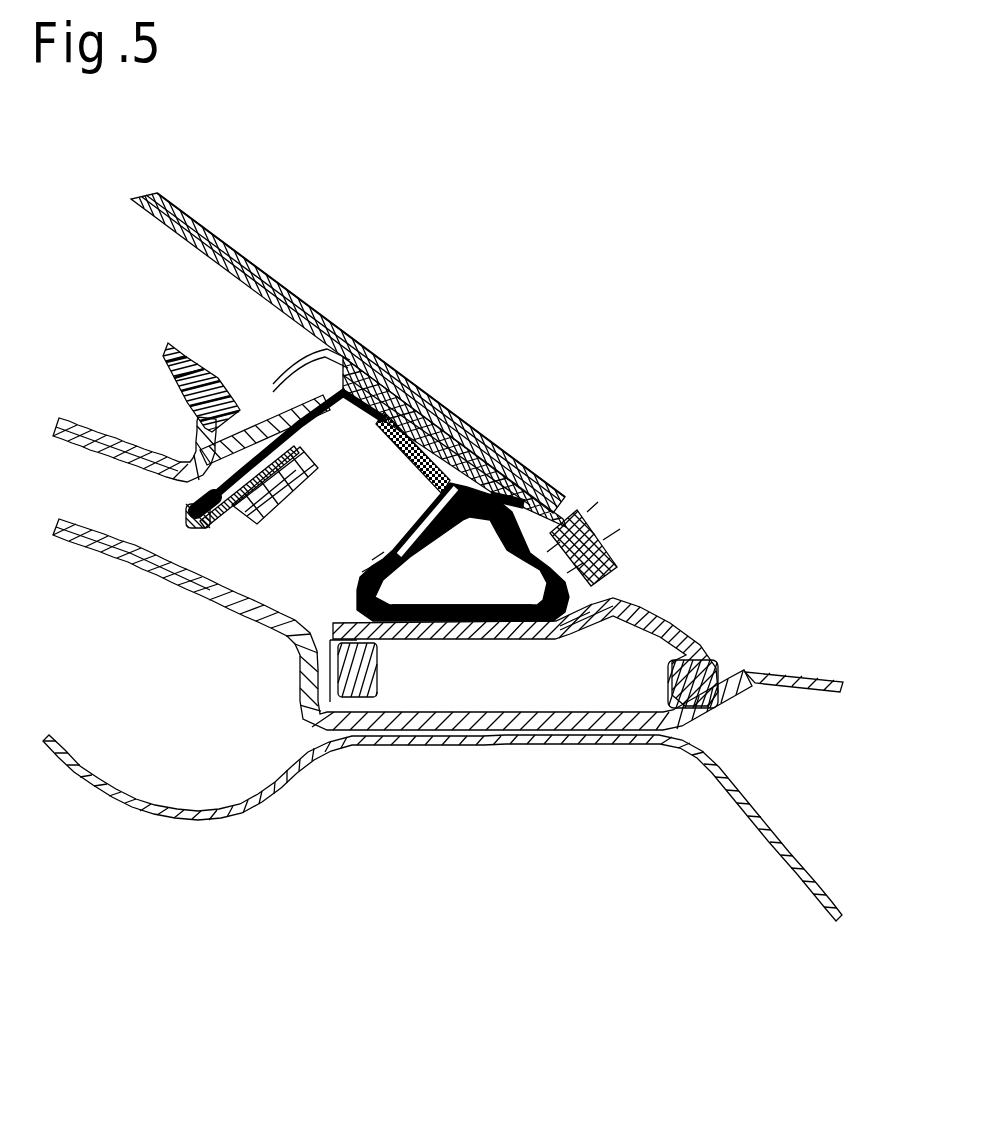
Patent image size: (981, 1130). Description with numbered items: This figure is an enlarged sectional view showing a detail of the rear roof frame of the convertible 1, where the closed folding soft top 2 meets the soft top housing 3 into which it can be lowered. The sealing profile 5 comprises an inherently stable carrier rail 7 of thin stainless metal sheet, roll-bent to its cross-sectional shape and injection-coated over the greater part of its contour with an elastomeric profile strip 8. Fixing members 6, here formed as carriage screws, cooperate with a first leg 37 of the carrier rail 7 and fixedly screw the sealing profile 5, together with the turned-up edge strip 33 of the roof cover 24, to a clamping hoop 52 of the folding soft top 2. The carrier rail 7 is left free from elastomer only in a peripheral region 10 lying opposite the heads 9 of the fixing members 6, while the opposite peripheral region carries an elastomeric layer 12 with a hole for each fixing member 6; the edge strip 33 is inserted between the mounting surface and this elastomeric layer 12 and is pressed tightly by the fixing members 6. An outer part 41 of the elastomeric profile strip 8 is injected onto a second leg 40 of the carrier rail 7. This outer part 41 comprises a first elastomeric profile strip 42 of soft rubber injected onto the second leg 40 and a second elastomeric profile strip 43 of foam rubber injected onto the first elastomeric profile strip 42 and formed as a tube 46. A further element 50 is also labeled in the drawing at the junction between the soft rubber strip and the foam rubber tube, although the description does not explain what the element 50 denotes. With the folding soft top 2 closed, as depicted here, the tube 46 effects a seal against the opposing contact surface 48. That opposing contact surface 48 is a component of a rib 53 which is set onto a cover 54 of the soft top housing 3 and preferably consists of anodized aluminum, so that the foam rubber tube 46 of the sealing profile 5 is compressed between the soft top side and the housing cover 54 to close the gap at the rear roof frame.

The convertible 1 is at (294, 847).
The folding soft top 2 is at (210, 229).
The soft top housing 3 is at (791, 671).
The sealing profile 5 is at (351, 590).
The fixing members 6 is at (165, 352).
The carrier rail 7 is at (233, 507).
The elastomeric profile strip 8 is at (356, 577).
The heads 9 is at (262, 527).
The peripheral region 10 is at (333, 424).
The elastomeric layer 12 is at (190, 502).
The roof cover 24 is at (251, 263).
The turned-up edge strip 33 is at (198, 484).
The first leg 37 is at (298, 500).
The second leg 40 is at (425, 511).
The outer part 41 is at (570, 597).
The first elastomeric profile strip 42 is at (421, 487).
The second elastomeric profile strip 43 is at (478, 605).
The tube 46 is at (368, 606).
The opposing contact surface 48 is at (455, 605).
The junction 50 is at (390, 571).
The clamping hoop 52 is at (315, 352).
The rib 53 is at (698, 633).
The cover 54 is at (547, 709).